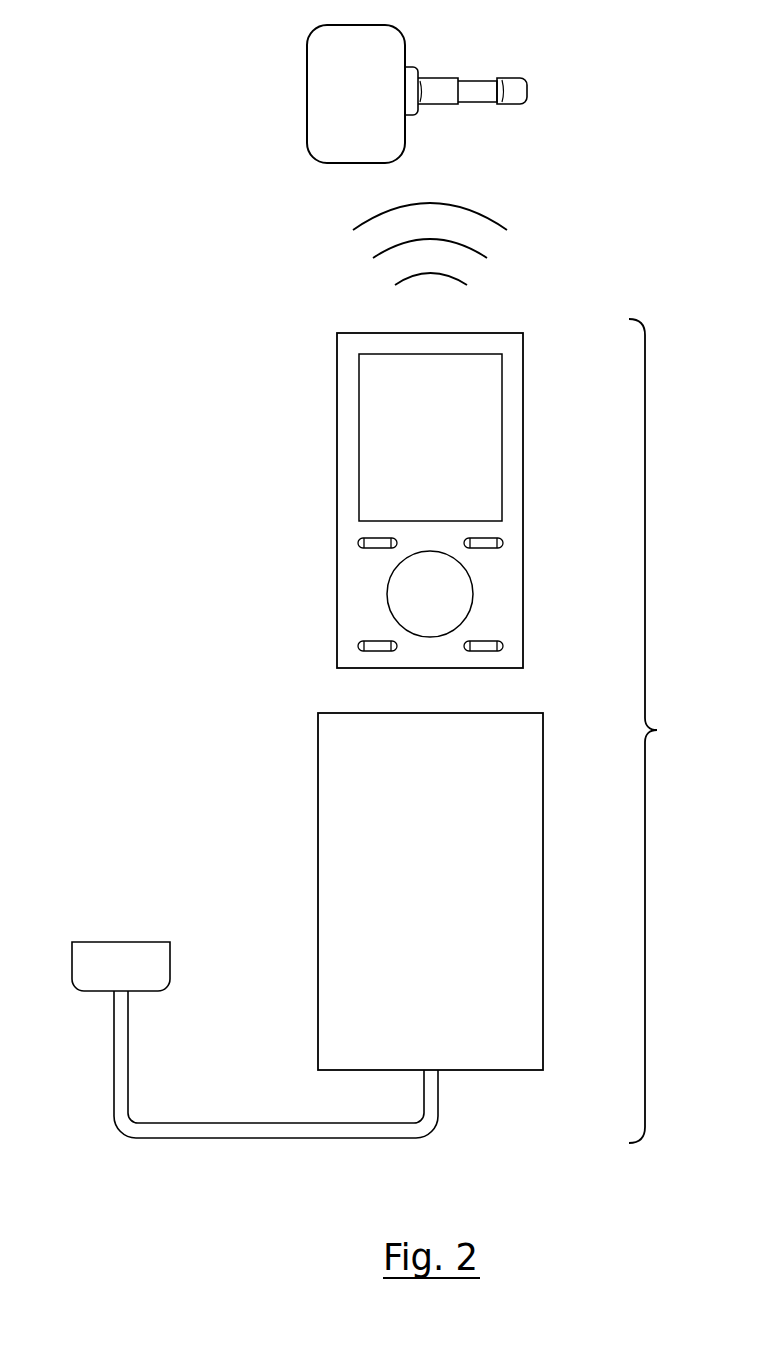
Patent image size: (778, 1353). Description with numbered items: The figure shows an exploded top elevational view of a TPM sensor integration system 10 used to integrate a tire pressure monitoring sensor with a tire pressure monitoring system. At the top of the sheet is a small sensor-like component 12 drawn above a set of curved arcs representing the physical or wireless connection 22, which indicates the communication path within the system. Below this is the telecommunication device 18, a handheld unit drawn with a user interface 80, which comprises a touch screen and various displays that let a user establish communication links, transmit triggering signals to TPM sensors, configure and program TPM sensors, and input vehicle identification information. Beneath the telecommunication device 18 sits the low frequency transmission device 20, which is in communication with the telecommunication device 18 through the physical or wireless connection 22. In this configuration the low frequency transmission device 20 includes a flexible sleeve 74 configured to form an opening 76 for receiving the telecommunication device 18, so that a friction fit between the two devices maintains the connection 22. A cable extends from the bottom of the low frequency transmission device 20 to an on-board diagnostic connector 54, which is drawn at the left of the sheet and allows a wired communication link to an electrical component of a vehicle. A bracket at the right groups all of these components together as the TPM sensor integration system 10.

The TPM sensor integration system 10 is at (654, 731).
The wireless transmitter 12 is at (307, 93).
The telecommunication device 18 is at (415, 500).
The low frequency transmission device 20 is at (451, 891).
The physical or wireless connection 22 is at (473, 210).
The on-board diagnostic connector 54 is at (72, 962).
The flexible sleeve 74 is at (530, 778).
The opening 76 is at (451, 862).
The user interface 80 is at (353, 430).